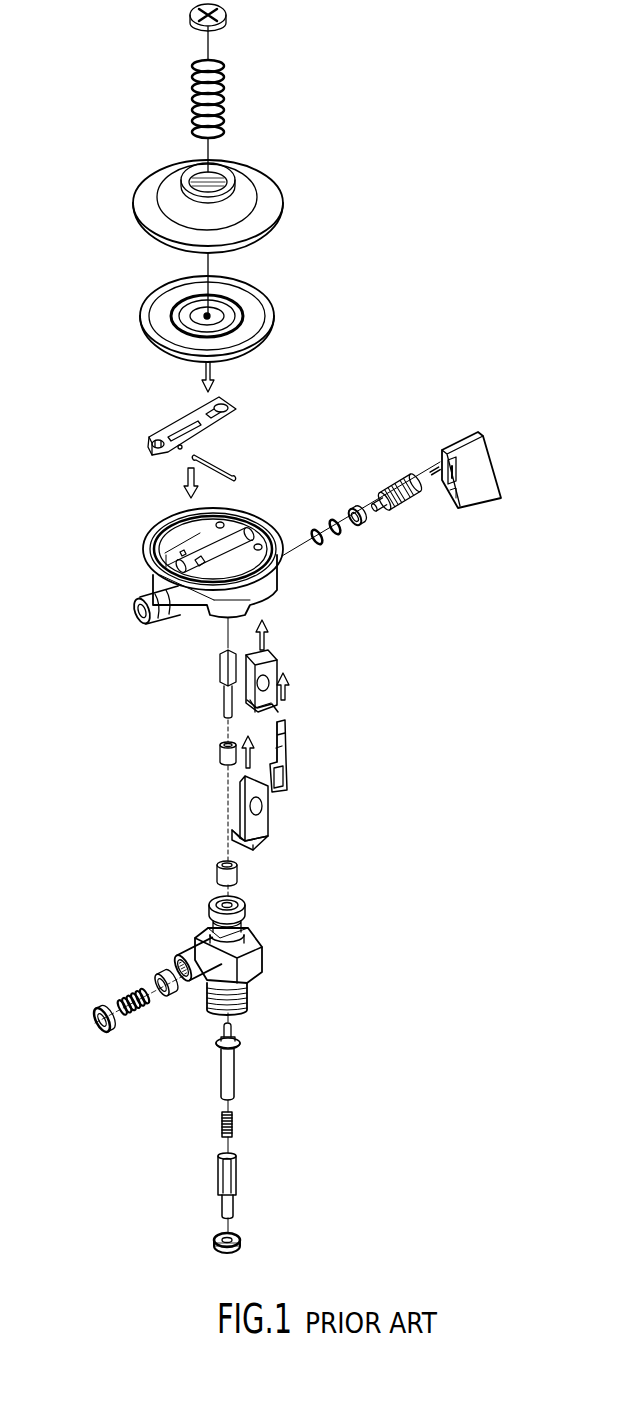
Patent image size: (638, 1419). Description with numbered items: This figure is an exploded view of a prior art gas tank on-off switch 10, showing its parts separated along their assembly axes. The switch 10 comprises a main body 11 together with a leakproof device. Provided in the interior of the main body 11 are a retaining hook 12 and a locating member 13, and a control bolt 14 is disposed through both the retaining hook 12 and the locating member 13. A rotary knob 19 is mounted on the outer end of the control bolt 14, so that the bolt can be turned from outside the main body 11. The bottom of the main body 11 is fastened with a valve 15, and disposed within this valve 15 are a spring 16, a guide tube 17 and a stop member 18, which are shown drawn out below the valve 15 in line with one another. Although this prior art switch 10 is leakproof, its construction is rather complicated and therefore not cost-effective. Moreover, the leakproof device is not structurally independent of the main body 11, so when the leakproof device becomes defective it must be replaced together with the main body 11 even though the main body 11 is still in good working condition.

The gas tank on-off switch 10 is at (488, 394).
The main body 11 is at (285, 354).
The retaining hook 12 is at (265, 800).
The locating member 13 is at (269, 672).
The control bolt 14 is at (395, 478).
The valve 15 is at (253, 962).
The spring 16 is at (234, 1127).
The guide tube 17 is at (237, 1181).
The stop member 18 is at (233, 1077).
The rotary knob 19 is at (483, 490).